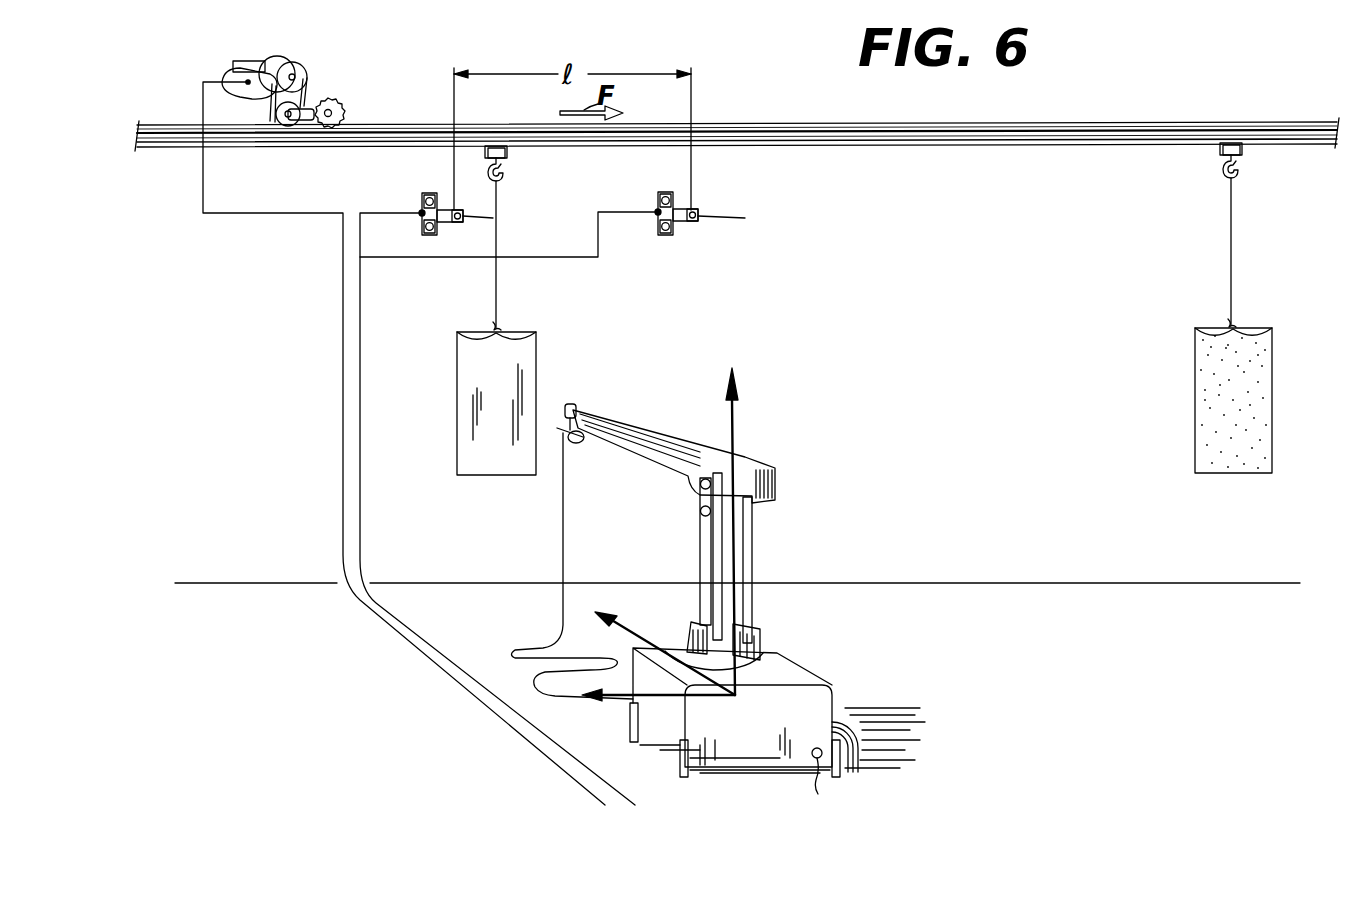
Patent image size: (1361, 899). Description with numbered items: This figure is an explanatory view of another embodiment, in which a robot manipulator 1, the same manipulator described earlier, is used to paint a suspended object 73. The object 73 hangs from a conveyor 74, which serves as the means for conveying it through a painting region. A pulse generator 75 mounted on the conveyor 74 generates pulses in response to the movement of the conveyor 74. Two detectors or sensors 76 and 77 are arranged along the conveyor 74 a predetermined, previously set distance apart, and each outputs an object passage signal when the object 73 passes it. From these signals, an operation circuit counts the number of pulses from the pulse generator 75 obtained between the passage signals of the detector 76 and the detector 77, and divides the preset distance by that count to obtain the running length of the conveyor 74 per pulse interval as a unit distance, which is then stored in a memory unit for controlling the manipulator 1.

The robot manipulator 1 is at (797, 433).
The suspended object 73 is at (480, 376).
The conveyor 74 is at (890, 137).
The pulse generator 75 is at (273, 66).
The detector 76 is at (445, 208).
The detector 77 is at (656, 207).